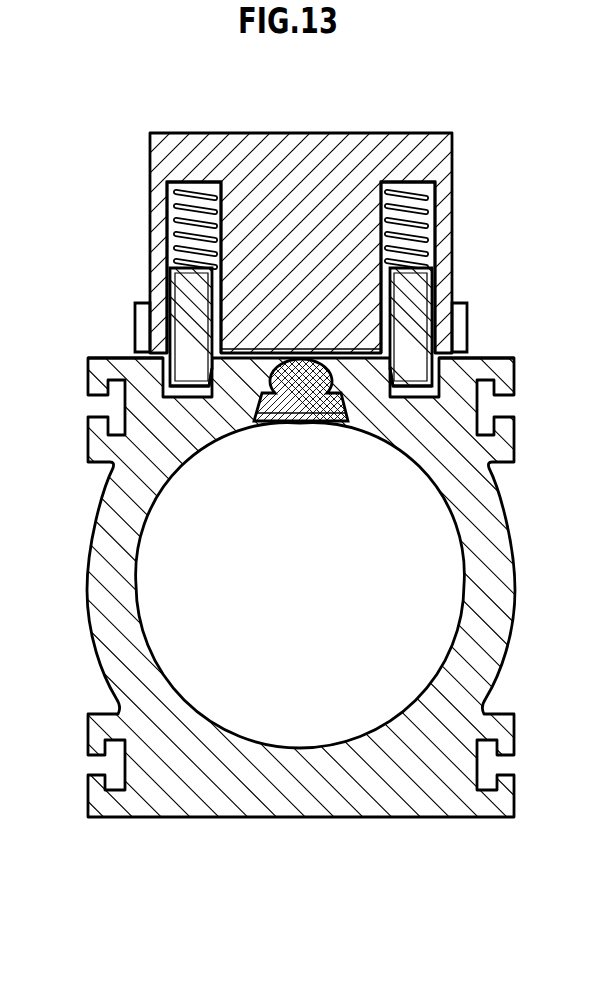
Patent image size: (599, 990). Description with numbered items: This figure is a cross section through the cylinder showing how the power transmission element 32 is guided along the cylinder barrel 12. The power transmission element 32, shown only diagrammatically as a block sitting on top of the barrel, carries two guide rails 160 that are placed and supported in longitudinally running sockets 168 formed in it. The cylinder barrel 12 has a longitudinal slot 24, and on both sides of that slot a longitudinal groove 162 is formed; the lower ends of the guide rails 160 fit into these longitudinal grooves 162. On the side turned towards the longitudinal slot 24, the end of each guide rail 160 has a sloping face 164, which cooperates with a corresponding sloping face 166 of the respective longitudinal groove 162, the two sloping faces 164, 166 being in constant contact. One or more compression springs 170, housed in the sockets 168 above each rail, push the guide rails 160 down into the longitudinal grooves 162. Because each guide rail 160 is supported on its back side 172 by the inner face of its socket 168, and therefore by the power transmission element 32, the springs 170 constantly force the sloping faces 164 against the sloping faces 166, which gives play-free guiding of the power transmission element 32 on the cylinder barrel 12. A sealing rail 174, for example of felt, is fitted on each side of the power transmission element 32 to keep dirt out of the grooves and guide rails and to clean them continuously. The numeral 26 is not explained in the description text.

The cylinder barrel 12 is at (160, 790).
The longitudinal slot 24 is at (354, 425).
The pad base 26 is at (295, 418).
The power transmission element 32 is at (320, 158).
The guide rail 160 is at (178, 283).
The longitudinal groove 162 is at (155, 375).
The sloping face 164 is at (206, 390).
The sloping face 166 is at (243, 392).
The socket 168 is at (208, 180).
The compression spring 170 is at (188, 200).
The back side 172 is at (188, 305).
The sealing rail 174 is at (140, 330).